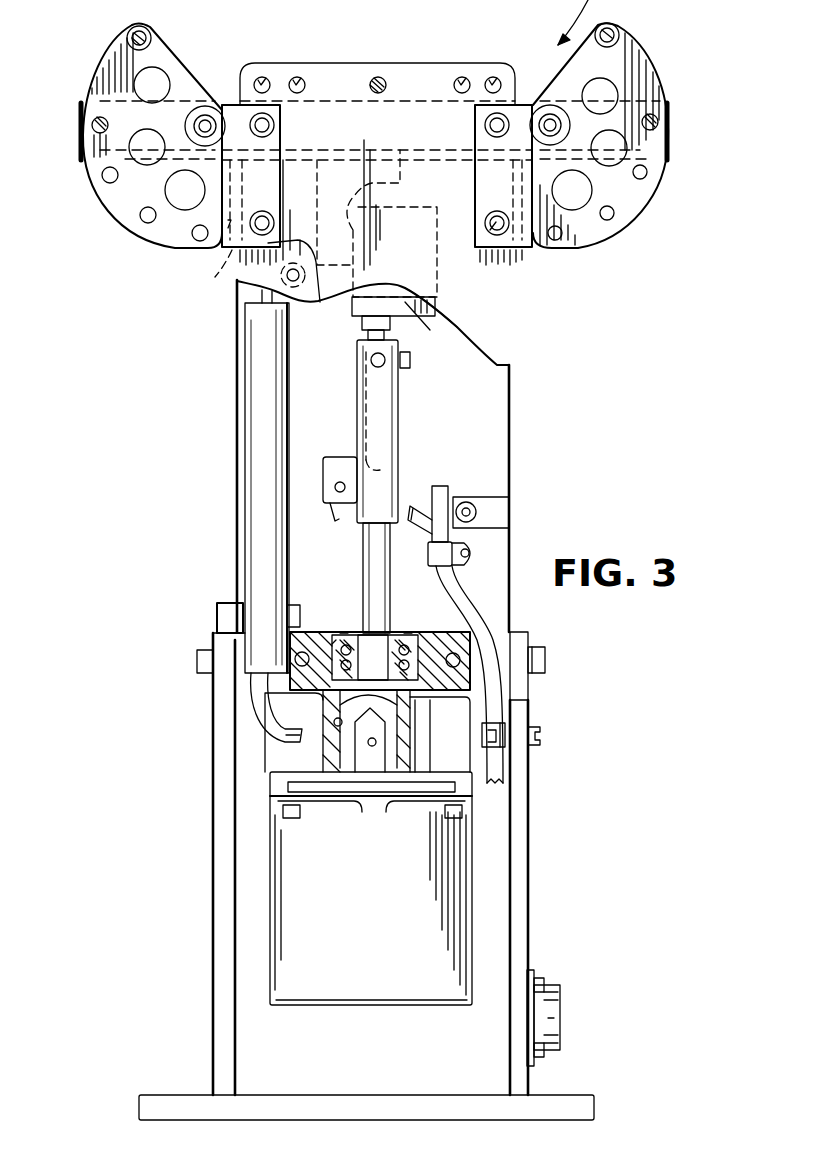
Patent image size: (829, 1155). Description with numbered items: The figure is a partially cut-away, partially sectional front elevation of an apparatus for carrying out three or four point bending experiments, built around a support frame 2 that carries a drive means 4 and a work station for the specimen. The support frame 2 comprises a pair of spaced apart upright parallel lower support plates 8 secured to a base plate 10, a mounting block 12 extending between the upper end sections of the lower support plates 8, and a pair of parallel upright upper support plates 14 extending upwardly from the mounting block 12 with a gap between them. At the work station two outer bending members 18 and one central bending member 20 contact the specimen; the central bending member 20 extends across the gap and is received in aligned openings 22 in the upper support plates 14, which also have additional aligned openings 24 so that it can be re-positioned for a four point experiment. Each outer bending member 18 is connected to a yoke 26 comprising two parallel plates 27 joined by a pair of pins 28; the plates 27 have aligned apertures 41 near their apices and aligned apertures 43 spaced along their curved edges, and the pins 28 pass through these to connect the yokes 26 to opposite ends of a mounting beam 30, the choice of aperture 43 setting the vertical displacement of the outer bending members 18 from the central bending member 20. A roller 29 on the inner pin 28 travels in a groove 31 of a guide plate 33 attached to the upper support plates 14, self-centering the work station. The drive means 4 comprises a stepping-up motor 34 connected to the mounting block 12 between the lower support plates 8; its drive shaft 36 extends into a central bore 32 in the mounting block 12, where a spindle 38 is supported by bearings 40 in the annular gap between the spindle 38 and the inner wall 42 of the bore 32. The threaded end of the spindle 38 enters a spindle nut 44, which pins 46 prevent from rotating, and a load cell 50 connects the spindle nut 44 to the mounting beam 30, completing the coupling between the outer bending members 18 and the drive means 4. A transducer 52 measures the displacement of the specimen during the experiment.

The support frame 2 is at (215, 538).
The drive means 4 is at (160, 980).
The lower support plates 8 is at (230, 886).
The base plate 10 is at (170, 1104).
The mounting block 12 is at (305, 640).
The upper support plates 14 is at (495, 473).
The outer bending members 18 is at (130, 34).
The central bending member 20 is at (380, 70).
The aligned openings 22 is at (372, 82).
The additional aligned openings 24 is at (296, 78).
The yoke 26 is at (92, 178).
The plates 27 is at (112, 75).
The pins 28 is at (90, 127).
The roller 29 is at (204, 118).
The mounting beam 30 is at (400, 130).
The grooves 31 is at (240, 276).
The central bore 32 is at (337, 713).
The guide plates 33 is at (313, 282).
The stepping-up motor 34 is at (375, 918).
The drive shaft 36 is at (376, 742).
The spindle 38 is at (360, 640).
The bearings 40 is at (406, 634).
The aligned apertures 41 is at (224, 100).
The inner wall 42 is at (336, 727).
The aligned apertures 43 is at (110, 184).
The spindle nut 44 is at (398, 462).
The pins 46 is at (380, 368).
The load cell 50 is at (412, 330).
The transducer 52 is at (268, 408).